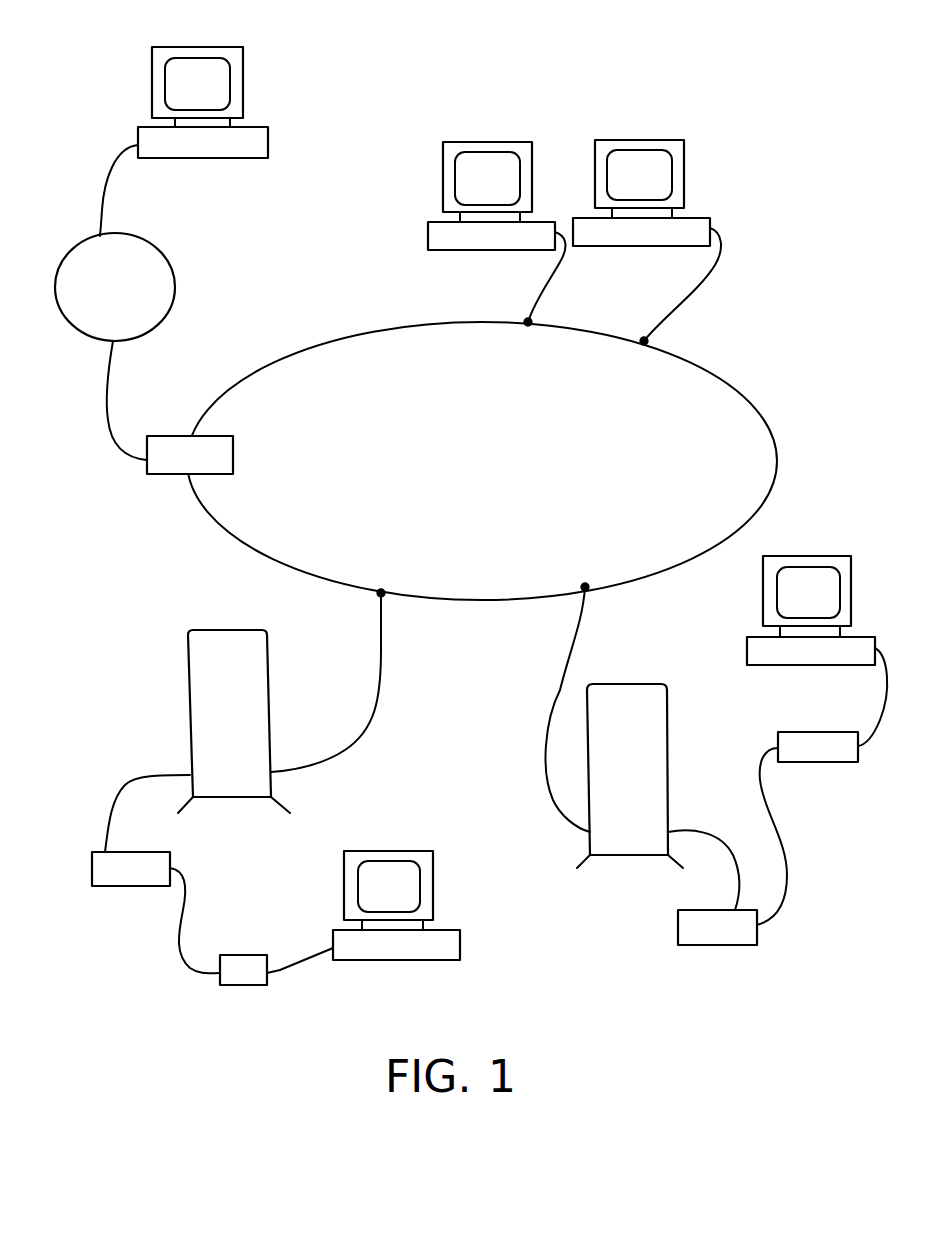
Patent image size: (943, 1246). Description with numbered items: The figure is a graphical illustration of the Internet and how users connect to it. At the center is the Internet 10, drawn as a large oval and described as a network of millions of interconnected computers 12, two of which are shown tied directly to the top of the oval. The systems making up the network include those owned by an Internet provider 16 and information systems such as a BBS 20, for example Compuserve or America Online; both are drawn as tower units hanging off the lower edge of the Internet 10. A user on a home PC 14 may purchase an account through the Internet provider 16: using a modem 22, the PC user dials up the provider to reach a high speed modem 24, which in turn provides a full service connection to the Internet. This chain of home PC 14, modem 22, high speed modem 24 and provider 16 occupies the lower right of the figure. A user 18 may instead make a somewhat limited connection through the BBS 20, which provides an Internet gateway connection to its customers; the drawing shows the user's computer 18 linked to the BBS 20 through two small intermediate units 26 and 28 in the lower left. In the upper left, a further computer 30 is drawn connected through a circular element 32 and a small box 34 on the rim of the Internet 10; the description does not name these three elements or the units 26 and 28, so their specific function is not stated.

The Internet 10 is at (312, 330).
The interconnected computers 12 is at (485, 141).
The home PC 14 is at (763, 586).
The Internet provider 16 is at (668, 718).
The user 18 is at (433, 867).
The information system (BBS) 20 is at (271, 663).
The modem 22 is at (822, 765).
The high speed modem 24 is at (740, 946).
The modem 26 is at (243, 987).
The modem 28 is at (122, 888).
The client computer 30 is at (243, 70).
The telephone network 32 is at (157, 242).
The gateway 34 is at (233, 444).